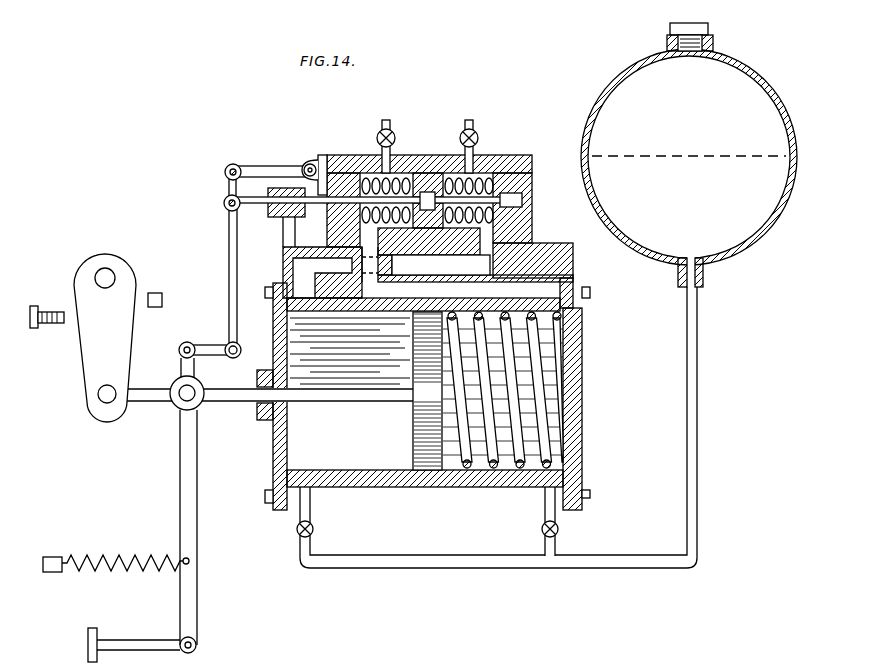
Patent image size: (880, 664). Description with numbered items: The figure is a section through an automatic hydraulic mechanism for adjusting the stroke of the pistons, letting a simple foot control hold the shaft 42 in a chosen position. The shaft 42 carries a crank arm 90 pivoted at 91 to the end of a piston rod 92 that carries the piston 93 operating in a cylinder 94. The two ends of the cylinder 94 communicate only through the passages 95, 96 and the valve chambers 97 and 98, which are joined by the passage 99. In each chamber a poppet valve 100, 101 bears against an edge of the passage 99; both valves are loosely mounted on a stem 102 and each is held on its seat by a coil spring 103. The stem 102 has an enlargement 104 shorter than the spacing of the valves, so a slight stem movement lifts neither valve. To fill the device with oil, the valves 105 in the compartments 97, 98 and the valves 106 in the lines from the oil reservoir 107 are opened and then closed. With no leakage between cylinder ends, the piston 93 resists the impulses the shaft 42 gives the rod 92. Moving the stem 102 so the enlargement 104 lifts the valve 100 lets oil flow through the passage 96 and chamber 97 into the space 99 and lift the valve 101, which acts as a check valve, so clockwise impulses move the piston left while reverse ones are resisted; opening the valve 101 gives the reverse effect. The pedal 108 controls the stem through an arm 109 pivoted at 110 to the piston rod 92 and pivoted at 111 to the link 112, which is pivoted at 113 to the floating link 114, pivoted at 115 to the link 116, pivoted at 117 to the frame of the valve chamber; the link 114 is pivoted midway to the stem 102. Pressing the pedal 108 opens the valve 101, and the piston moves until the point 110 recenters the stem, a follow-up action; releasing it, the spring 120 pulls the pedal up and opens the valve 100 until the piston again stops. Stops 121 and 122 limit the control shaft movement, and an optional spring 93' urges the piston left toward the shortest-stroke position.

The shaft 42 is at (105, 276).
The crank arm 90 is at (88, 348).
The pivot 91 is at (104, 395).
The piston rod 92 is at (252, 398).
The piston 93 is at (408, 391).
The spring 93' is at (534, 390).
The cylinder 94 is at (390, 482).
The passage 95 is at (568, 264).
The passage 96 is at (308, 314).
The valve chamber 97 is at (482, 178).
The valve chamber 98 is at (372, 180).
The passage 99 is at (424, 190).
The poppet valve 100 is at (445, 238).
The poppet valve 101 is at (410, 214).
The stem 102 is at (520, 190).
The coil spring 103 is at (328, 156).
The enlargement 104 is at (436, 190).
The valve 105 is at (390, 129).
The valve 106 is at (314, 530).
The oil reservoir 107 is at (762, 238).
The pedal 108 is at (98, 630).
The arm 109 is at (196, 540).
The pivot 110 is at (185, 398).
The pivot 111 is at (188, 342).
The link 112 is at (208, 355).
The pivot 113 is at (236, 343).
The floating link 114 is at (229, 254).
The pivot 115 is at (225, 173).
The link 116 is at (259, 166).
The pivot 117 is at (306, 164).
The spring 120 is at (137, 552).
The stop 121 is at (155, 297).
The stop 122 is at (52, 308).